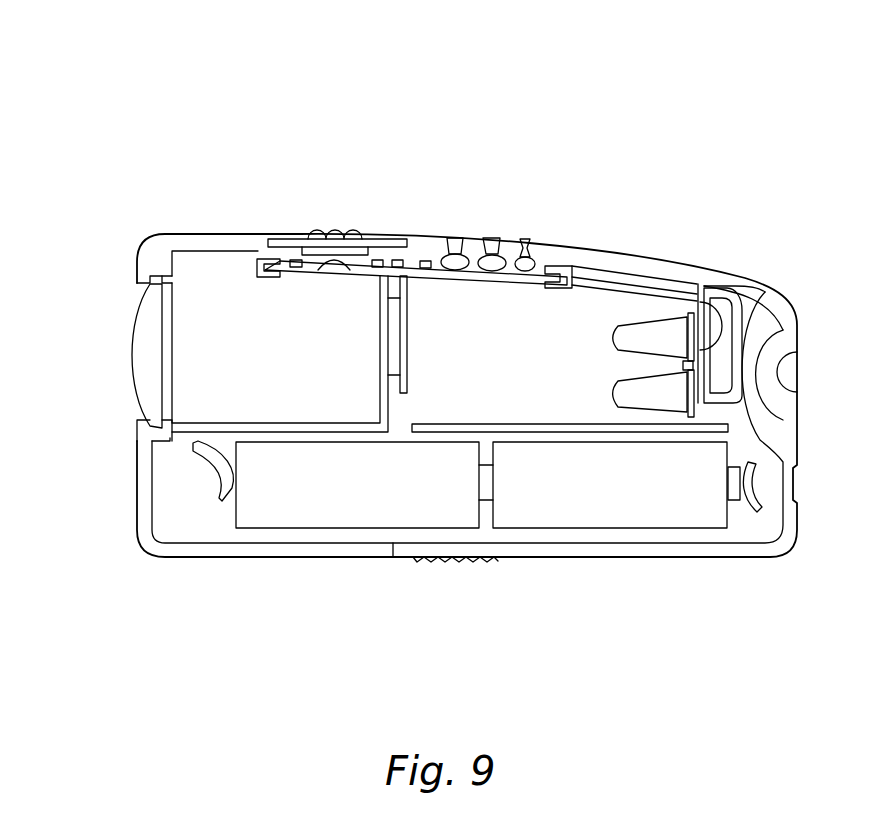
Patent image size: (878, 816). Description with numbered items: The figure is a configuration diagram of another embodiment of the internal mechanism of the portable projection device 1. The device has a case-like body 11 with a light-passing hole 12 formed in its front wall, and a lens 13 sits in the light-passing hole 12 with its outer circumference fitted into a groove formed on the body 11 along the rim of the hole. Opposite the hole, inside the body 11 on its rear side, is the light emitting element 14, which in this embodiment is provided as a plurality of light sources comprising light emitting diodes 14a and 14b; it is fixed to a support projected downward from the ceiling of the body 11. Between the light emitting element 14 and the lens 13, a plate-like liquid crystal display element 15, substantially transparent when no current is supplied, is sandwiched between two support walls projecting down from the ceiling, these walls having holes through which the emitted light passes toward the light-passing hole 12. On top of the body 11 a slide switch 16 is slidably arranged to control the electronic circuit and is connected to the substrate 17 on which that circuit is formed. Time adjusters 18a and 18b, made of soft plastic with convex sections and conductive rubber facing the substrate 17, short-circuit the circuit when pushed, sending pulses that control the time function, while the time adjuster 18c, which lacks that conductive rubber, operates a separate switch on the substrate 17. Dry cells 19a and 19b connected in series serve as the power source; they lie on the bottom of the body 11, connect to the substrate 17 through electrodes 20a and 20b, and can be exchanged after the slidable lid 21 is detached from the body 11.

The portable projection device 1 is at (412, 86).
The body 11 is at (201, 244).
The light-passing hole 12 is at (143, 288).
The lens 13 is at (140, 360).
The light emitting element 14 is at (592, 358).
The light emitting diode 14a is at (645, 337).
The light emitting diode 14b is at (645, 392).
The liquid crystal display element 15 is at (397, 342).
The slide switch 16 is at (364, 244).
The substrate 17 is at (521, 281).
The time adjuster 18a is at (449, 252).
The time adjuster 18b is at (489, 249).
The time adjuster 18c is at (540, 243).
The dry cell 19a is at (321, 523).
The dry cell 19b is at (683, 517).
The electrode 20a is at (225, 457).
The electrode 20b is at (750, 487).
The slidable lid 21 is at (574, 553).